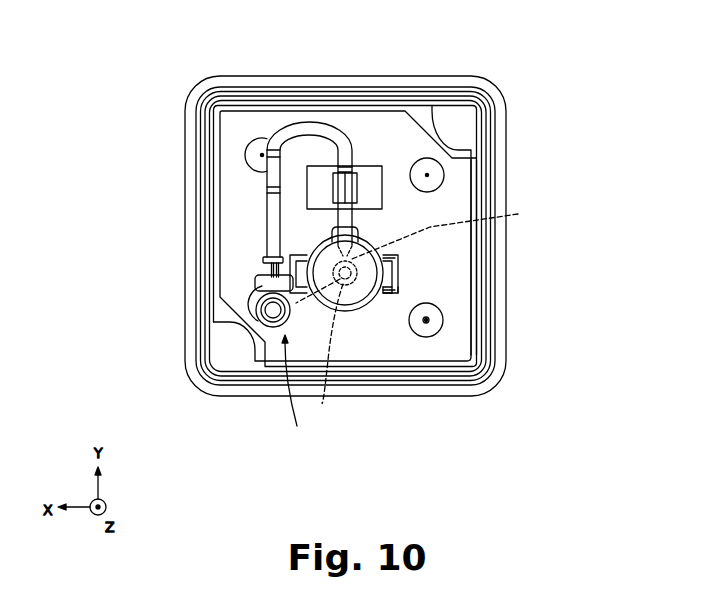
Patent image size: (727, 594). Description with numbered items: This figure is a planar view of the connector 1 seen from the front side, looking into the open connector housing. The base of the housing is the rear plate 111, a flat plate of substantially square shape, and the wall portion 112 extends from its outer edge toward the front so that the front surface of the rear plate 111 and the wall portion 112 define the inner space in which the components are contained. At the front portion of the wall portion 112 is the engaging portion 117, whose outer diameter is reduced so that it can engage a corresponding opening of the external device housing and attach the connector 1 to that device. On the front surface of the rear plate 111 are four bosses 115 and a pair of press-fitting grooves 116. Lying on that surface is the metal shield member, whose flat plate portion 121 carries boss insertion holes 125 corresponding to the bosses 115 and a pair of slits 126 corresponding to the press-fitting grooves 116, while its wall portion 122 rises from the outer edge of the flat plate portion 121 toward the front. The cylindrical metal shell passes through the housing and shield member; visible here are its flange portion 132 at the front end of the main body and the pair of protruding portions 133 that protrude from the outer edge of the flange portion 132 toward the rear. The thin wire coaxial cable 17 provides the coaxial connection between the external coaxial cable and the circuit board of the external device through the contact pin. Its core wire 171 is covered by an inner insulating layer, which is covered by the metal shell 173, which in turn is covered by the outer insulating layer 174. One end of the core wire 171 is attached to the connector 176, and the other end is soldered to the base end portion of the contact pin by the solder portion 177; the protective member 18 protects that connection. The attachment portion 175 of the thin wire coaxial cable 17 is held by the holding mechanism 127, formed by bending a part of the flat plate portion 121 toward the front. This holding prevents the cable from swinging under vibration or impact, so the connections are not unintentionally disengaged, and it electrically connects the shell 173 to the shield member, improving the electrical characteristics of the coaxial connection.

The connector 1 is at (347, 236).
The thin wire coaxial cable 17 is at (244, 145).
The protective member 18 is at (347, 312).
The rear plate 111 is at (387, 196).
The wall portion 112 is at (497, 129).
The bosses 115 is at (433, 327).
The press-fitting grooves 116 is at (397, 282).
The engaging portion 117 is at (488, 98).
The flat plate portion 121 is at (458, 242).
The wall portion 122 is at (473, 188).
The boss insertion holes 125 is at (440, 303).
The slits 126 is at (393, 286).
The holding mechanism 127 is at (332, 187).
The flange portion 132 is at (383, 272).
The protruding portions 133 is at (378, 297).
The core wire 171 is at (319, 352).
The shell 173 is at (449, 231).
The outer insulating layer 174 is at (302, 128).
The attachment portion 175 is at (345, 178).
The connector 176 is at (298, 392).
The solder portion 177 is at (256, 327).